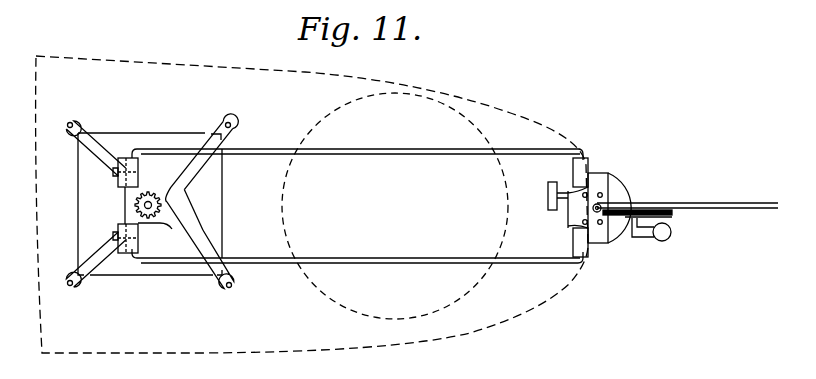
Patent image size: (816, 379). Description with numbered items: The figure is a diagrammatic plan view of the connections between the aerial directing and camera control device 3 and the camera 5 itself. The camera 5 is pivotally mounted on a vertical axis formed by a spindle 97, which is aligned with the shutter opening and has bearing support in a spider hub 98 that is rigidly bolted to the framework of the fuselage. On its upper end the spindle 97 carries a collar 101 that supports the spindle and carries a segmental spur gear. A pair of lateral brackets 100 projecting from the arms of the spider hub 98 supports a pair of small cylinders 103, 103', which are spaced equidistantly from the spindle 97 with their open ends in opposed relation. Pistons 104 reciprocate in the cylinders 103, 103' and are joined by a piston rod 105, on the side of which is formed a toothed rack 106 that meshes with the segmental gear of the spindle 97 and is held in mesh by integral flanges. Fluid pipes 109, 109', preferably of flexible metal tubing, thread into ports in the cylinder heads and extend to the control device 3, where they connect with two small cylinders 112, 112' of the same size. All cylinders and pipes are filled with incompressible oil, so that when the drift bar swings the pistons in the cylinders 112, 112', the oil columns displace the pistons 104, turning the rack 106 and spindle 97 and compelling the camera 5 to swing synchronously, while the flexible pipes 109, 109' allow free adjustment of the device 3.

The aerial directing and camera control device 3 is at (612, 181).
The camera 5 is at (189, 120).
The spindle 97 is at (164, 205).
The spider hub 98 is at (178, 232).
The lateral brackets 100 is at (116, 158).
The collar 101 is at (150, 191).
The cylinder 103 is at (143, 238).
The cylinder 103' is at (132, 150).
The pistons 104 is at (118, 173).
The piston rod 105 is at (130, 192).
The toothed rack 106 is at (131, 205).
The fluid pipe 109 is at (357, 248).
The fluid pipe 109' is at (357, 143).
The cylinder 112 is at (596, 255).
The cylinder 112' is at (591, 155).